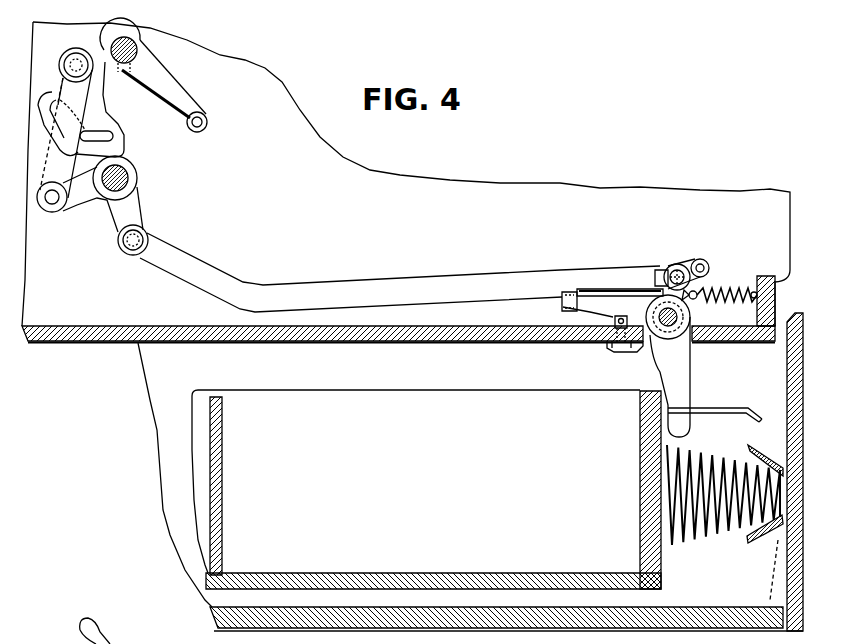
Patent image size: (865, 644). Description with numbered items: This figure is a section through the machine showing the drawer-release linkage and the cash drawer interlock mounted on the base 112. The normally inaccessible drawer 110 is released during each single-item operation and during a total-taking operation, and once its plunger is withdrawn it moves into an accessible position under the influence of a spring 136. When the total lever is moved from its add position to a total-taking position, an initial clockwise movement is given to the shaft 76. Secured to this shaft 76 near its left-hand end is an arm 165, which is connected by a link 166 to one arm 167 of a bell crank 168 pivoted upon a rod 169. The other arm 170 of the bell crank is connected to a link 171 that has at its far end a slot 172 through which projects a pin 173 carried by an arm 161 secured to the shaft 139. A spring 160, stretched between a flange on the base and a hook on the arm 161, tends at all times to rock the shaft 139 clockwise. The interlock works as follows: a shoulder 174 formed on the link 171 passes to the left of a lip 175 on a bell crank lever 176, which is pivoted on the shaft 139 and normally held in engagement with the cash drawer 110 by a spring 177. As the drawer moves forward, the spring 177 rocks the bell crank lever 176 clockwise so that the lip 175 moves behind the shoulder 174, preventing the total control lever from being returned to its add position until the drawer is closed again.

The shaft 76 is at (118, 66).
The drawer 110 is at (501, 391).
The base 112 is at (722, 341).
The spring 136 is at (738, 452).
The shaft 139 is at (668, 334).
The spring 160 is at (716, 290).
The arm 161 is at (695, 297).
The arm 165 is at (100, 108).
The link 166 is at (79, 90).
The arm 167 is at (76, 200).
The bell crank 168 is at (135, 167).
The rod 169 is at (126, 180).
The arm 170 is at (134, 207).
The link 171 is at (399, 286).
The slot 172 is at (705, 265).
The pin 173 is at (664, 269).
The shoulder 174 is at (577, 294).
The lip 175 is at (561, 300).
The bell crank lever 176 is at (614, 319).
The spring 177 is at (612, 349).